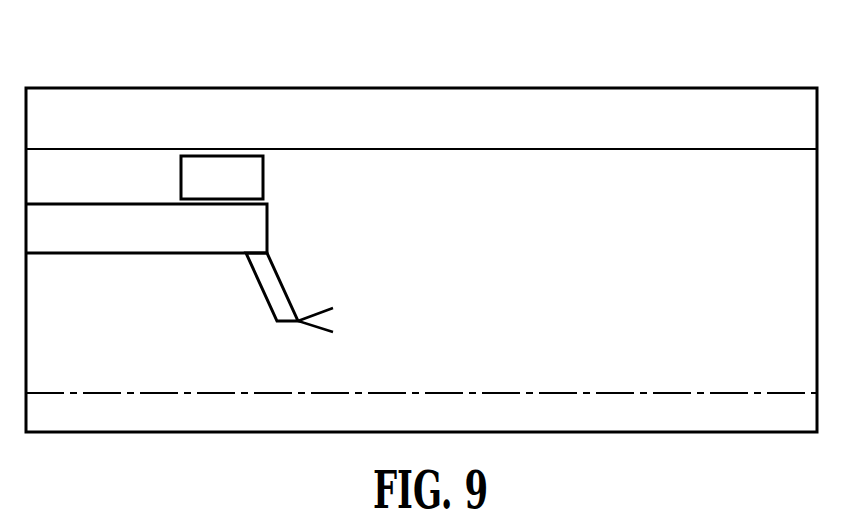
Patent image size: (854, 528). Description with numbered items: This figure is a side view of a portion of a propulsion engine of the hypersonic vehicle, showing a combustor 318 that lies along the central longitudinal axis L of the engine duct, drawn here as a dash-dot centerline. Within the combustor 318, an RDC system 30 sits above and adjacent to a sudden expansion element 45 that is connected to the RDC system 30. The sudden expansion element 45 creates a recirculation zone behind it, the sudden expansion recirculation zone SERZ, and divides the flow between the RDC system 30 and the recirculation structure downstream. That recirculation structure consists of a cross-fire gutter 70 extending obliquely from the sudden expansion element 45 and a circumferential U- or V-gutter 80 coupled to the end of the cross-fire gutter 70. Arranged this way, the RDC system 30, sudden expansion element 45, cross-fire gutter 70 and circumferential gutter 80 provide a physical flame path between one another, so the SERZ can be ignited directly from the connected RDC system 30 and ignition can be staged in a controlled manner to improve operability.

The RDC system 30 is at (204, 111).
The sudden expansion element 45 is at (223, 143).
The sudden expansion recirculation zone SERZ is at (436, 143).
The cross-fire gutter 70 is at (483, 174).
The circumferential U- or V-gutter 80 is at (279, 403).
The combustor 318 is at (421, 230).
The central longitudinal axis L is at (421, 445).